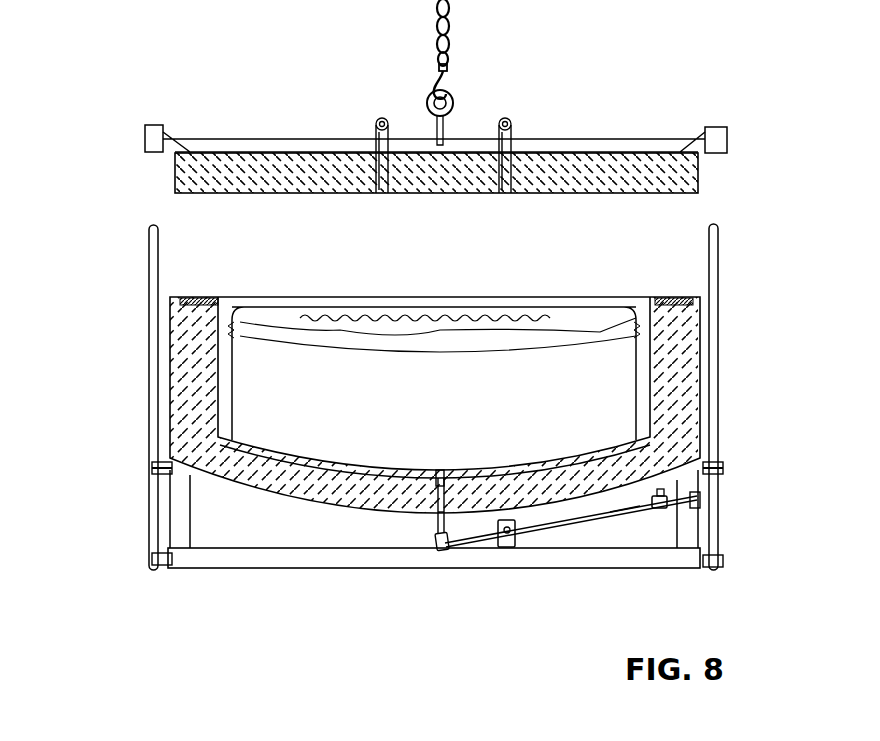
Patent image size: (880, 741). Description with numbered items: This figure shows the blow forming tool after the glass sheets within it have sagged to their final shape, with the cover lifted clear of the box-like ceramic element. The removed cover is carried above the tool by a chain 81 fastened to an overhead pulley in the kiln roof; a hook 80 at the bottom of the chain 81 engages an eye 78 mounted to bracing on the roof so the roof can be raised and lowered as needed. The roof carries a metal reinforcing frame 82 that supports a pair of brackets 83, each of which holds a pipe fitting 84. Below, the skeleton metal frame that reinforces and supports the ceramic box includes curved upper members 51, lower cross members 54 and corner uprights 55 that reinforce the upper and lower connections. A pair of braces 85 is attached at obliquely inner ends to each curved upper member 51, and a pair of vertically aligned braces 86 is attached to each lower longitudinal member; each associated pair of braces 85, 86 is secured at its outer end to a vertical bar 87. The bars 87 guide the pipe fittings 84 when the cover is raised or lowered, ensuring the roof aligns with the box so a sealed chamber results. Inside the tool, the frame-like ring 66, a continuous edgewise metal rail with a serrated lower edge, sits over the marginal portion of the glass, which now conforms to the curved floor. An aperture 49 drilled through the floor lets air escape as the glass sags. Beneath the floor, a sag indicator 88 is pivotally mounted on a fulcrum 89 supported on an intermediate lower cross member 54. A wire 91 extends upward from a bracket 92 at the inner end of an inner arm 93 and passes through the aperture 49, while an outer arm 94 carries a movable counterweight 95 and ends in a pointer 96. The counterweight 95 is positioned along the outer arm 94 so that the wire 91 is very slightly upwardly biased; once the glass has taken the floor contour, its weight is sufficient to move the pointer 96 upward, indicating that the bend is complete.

The aperture 49 is at (441, 478).
The curved upper member 51 is at (152, 465).
The lower cross member 54 is at (306, 569).
The corner upright 55 is at (192, 505).
The frame-like ring 66 is at (362, 307).
The eye 78 is at (458, 100).
The hook 80 is at (437, 92).
The chain 81 is at (455, 34).
The metal reinforcing frame 82 is at (245, 139).
The bracket 83 is at (172, 157).
The pipe fitting 84 is at (145, 136).
The brace 85 is at (158, 474).
The vertically aligned brace 86 is at (152, 560).
The vertical bar 87 is at (149, 255).
The sag indicator 88 is at (575, 520).
The fulcrum 89 is at (508, 547).
The wire 91 is at (437, 520).
The bracket 92 is at (437, 550).
The inner arm 93 is at (482, 545).
The outer arm 94 is at (626, 512).
The movable counterweight 95 is at (658, 512).
The pointer 96 is at (700, 507).